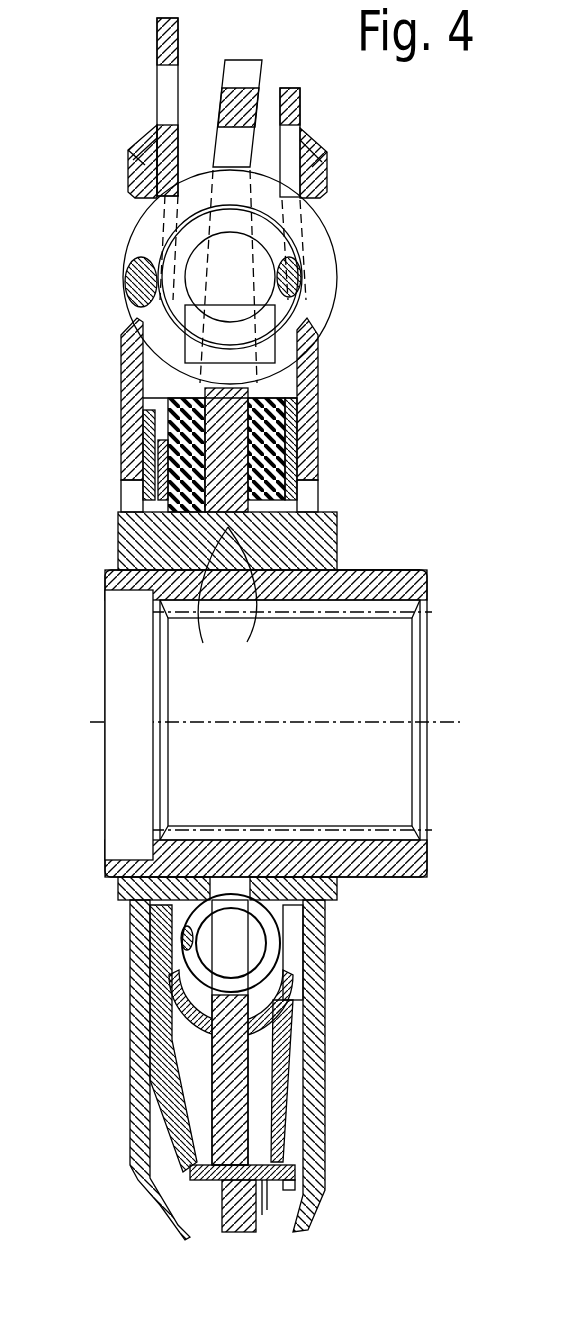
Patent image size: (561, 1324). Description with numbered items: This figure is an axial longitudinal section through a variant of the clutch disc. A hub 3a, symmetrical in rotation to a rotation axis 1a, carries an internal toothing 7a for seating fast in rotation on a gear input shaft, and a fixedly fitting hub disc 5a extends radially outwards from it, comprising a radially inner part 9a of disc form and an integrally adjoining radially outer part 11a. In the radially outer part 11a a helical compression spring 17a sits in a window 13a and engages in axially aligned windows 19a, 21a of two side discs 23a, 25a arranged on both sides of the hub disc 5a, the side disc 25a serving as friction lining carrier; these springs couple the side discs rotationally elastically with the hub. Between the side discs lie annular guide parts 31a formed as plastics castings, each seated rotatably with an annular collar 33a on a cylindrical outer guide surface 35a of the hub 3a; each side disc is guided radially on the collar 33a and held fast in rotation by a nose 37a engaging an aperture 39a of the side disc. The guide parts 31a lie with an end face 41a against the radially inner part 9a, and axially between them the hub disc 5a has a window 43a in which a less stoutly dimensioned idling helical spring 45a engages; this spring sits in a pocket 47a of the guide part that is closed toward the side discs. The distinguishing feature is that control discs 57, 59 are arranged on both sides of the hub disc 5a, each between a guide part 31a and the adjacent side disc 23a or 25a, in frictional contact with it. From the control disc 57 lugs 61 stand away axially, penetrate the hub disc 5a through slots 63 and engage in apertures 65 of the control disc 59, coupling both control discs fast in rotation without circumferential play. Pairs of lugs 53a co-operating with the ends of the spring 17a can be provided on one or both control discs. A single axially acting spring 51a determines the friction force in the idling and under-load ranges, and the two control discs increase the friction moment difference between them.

The rotation axis 1a is at (455, 722).
The hub 3a is at (412, 592).
The hub disc 5a is at (240, 147).
The internal toothing 7a is at (398, 622).
The radially inner part 9a is at (240, 482).
The radially outer part 11a is at (258, 1082).
The window 13a is at (283, 125).
The helical compression spring 17a is at (150, 240).
The window 19a is at (300, 168).
The window 21a is at (145, 168).
The side disc 23a is at (310, 360).
The side disc 25a is at (125, 360).
The guide part 31a is at (178, 420).
The annular collar 33a is at (128, 890).
The cylindrical outer guide surface 35a is at (395, 563).
The nose 37a is at (122, 545).
The aperture 39a is at (132, 498).
The end face 41a is at (227, 597).
The window 43a is at (222, 1014).
The helical spring 45a is at (182, 953).
The pocket 47a is at (190, 992).
The spring 51a is at (162, 470).
The lug 53a is at (226, 314).
The control disc 57 is at (150, 450).
The control disc 59 is at (300, 400).
The lug 61 is at (265, 1188).
The slot 63 is at (240, 1236).
The aperture 65 is at (282, 1189).